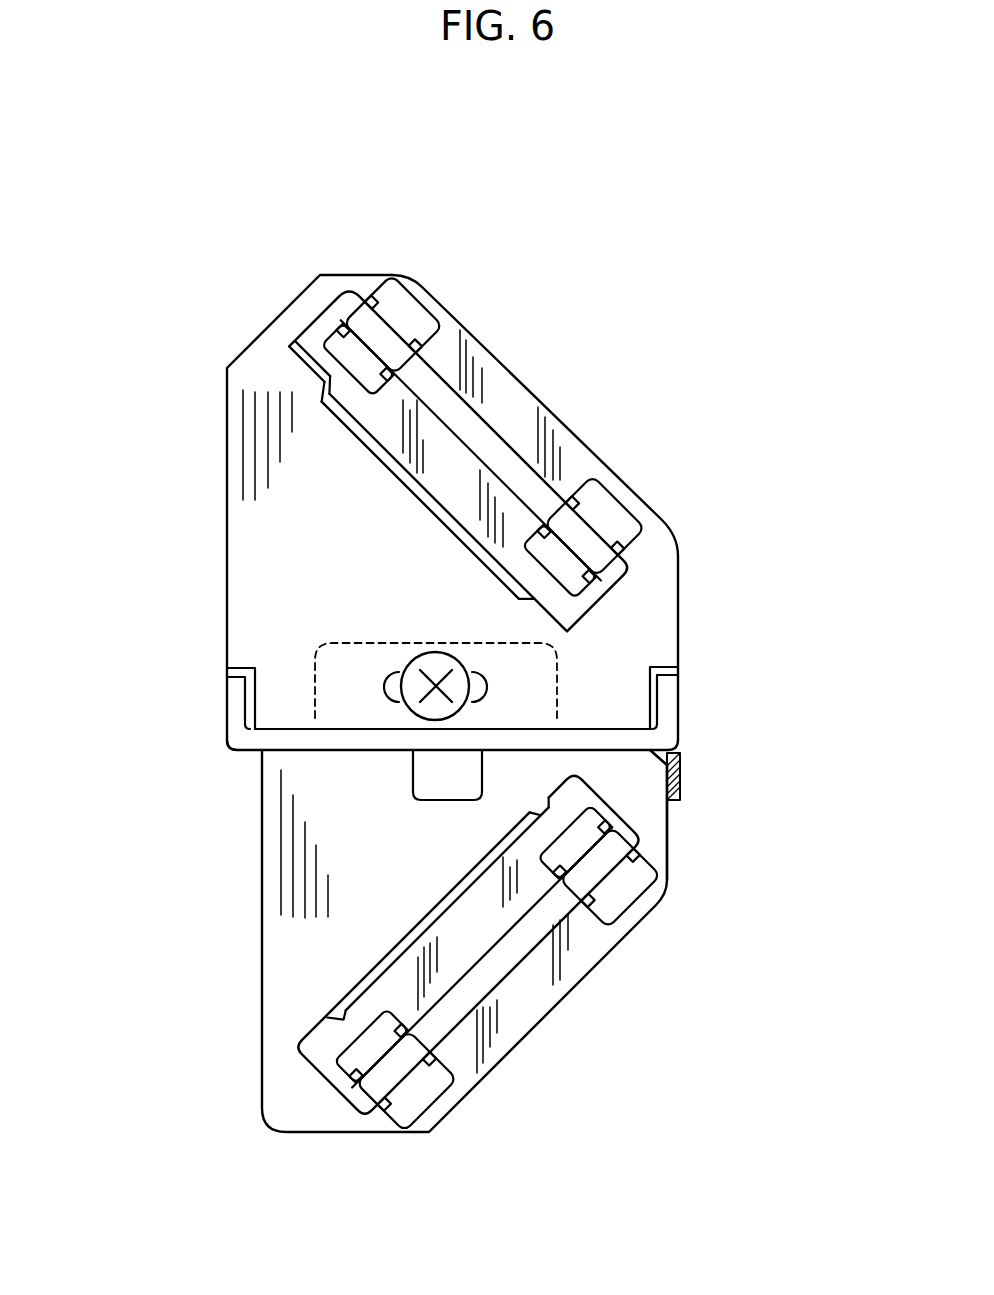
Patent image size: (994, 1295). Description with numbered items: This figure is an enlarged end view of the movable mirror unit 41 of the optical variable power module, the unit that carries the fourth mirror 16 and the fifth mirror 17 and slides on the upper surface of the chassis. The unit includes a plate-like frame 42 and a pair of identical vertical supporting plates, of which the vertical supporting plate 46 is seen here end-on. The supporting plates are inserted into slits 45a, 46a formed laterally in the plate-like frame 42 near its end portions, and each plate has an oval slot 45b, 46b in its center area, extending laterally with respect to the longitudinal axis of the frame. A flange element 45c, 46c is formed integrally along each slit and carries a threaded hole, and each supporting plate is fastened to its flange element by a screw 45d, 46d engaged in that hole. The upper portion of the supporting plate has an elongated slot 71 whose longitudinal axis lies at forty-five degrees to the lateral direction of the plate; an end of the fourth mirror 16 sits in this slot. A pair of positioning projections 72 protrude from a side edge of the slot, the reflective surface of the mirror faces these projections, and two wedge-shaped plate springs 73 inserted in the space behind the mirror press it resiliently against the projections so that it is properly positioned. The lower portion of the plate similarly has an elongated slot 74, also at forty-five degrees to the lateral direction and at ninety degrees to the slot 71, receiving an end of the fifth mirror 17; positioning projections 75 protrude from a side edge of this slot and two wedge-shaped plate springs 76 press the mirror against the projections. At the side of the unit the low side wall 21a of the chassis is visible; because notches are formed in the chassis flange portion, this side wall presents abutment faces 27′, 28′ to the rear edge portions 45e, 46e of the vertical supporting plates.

The movable mirror unit 41 is at (293, 227).
The plate-like frame 42 is at (232, 708).
The vertical supporting plate 46 is at (250, 852).
The fourth mirror 16 is at (427, 410).
The fifth mirror 17 is at (505, 912).
The elongated slot 71 is at (524, 470).
The elongated slot 74 is at (464, 1022).
The positioning projections 72 is at (530, 597).
The positioning projections 75 is at (538, 812).
The wedge-shaped plate springs 73 is at (407, 312).
The wedge-shaped plate springs 76 is at (630, 900).
The side wall 21a is at (694, 770).
The abutment face 27′ is at (767, 790).
The abutment face 28′ is at (663, 797).
The slit 45a is at (151, 765).
The slit 46a is at (255, 751).
The oval slot 45b is at (296, 665).
The oval slot 46b is at (390, 680).
The flange element 45c is at (673, 647).
The flange element 46c is at (560, 680).
The screw 45d is at (252, 633).
The screw 46d is at (433, 663).
The rear edge portion 45e is at (771, 827).
The rear edge portion 46e is at (670, 843).